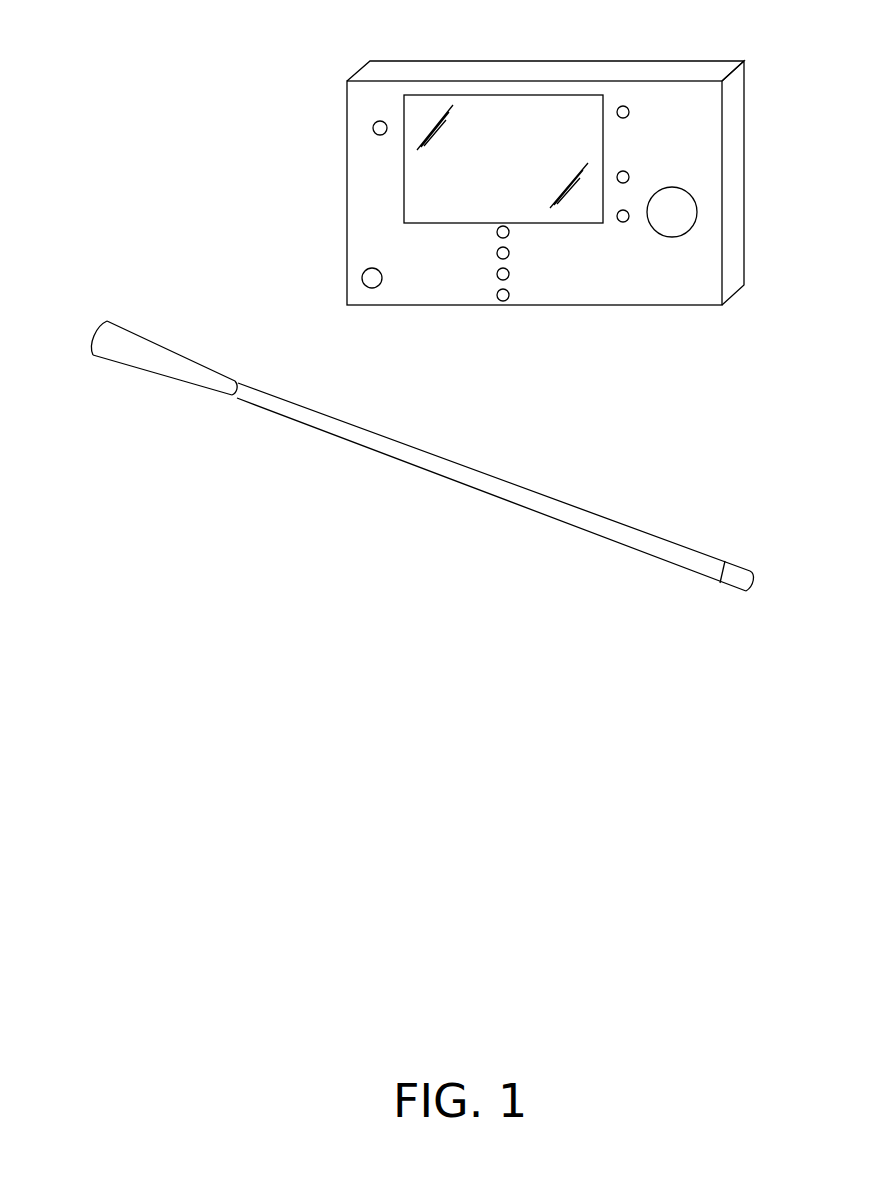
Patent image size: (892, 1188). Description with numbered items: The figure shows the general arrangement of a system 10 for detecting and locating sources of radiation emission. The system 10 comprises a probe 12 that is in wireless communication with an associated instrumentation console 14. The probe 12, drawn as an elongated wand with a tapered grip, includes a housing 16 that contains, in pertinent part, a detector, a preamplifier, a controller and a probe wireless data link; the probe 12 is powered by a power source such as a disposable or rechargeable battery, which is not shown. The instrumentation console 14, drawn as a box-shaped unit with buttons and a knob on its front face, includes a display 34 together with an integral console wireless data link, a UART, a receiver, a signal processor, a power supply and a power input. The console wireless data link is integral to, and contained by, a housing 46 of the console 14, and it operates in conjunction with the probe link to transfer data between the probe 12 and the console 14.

The system 10 is at (148, 152).
The probe 12 is at (417, 468).
The instrumentation console 14 is at (346, 213).
The housing 16 is at (563, 499).
The display 34 is at (528, 112).
The housing 46 is at (741, 117).